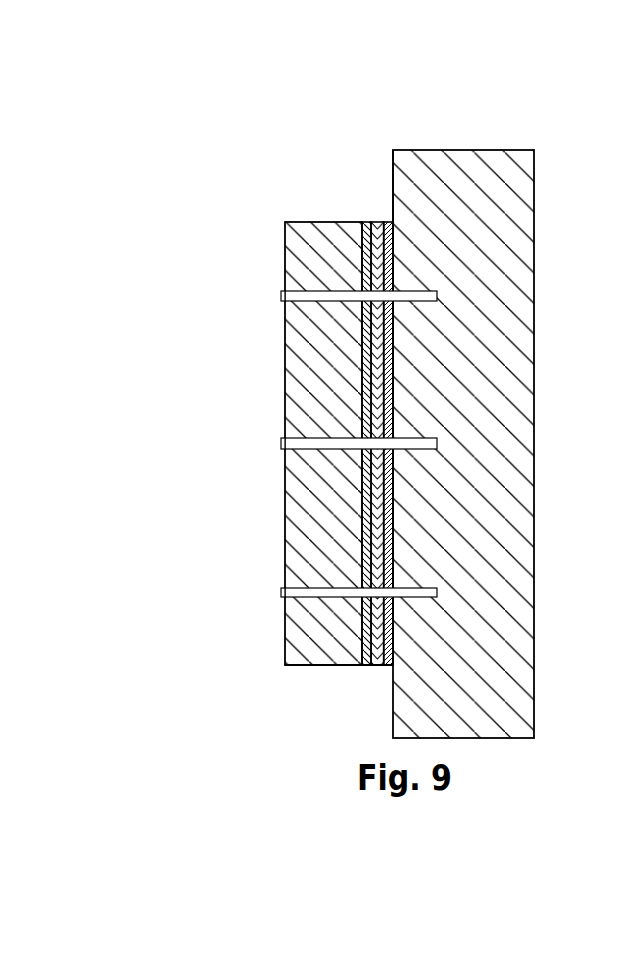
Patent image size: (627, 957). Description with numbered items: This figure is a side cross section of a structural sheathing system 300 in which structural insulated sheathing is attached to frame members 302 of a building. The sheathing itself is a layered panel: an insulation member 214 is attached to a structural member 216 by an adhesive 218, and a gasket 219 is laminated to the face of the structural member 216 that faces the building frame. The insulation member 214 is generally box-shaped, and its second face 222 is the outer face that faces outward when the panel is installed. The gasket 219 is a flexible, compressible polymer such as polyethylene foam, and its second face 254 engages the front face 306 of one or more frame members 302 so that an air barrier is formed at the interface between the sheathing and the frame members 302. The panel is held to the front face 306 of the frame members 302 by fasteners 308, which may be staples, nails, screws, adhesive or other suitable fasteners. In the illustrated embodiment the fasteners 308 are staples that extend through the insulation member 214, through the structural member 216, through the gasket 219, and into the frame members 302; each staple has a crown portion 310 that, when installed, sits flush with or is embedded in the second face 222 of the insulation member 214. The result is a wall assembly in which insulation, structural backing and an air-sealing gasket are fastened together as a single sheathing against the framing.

The structural sheathing system 300 is at (397, 396).
The frame members 302 is at (490, 213).
The second face 222 is at (285, 380).
The adhesive 218 is at (366, 667).
The structural member 216 is at (378, 222).
The gasket 219 is at (386, 222).
The front face 306 is at (393, 173).
The second face 254 is at (393, 367).
The insulation member 214 is at (302, 667).
The fasteners 308 is at (315, 291).
The crown portion 310 is at (281, 295).